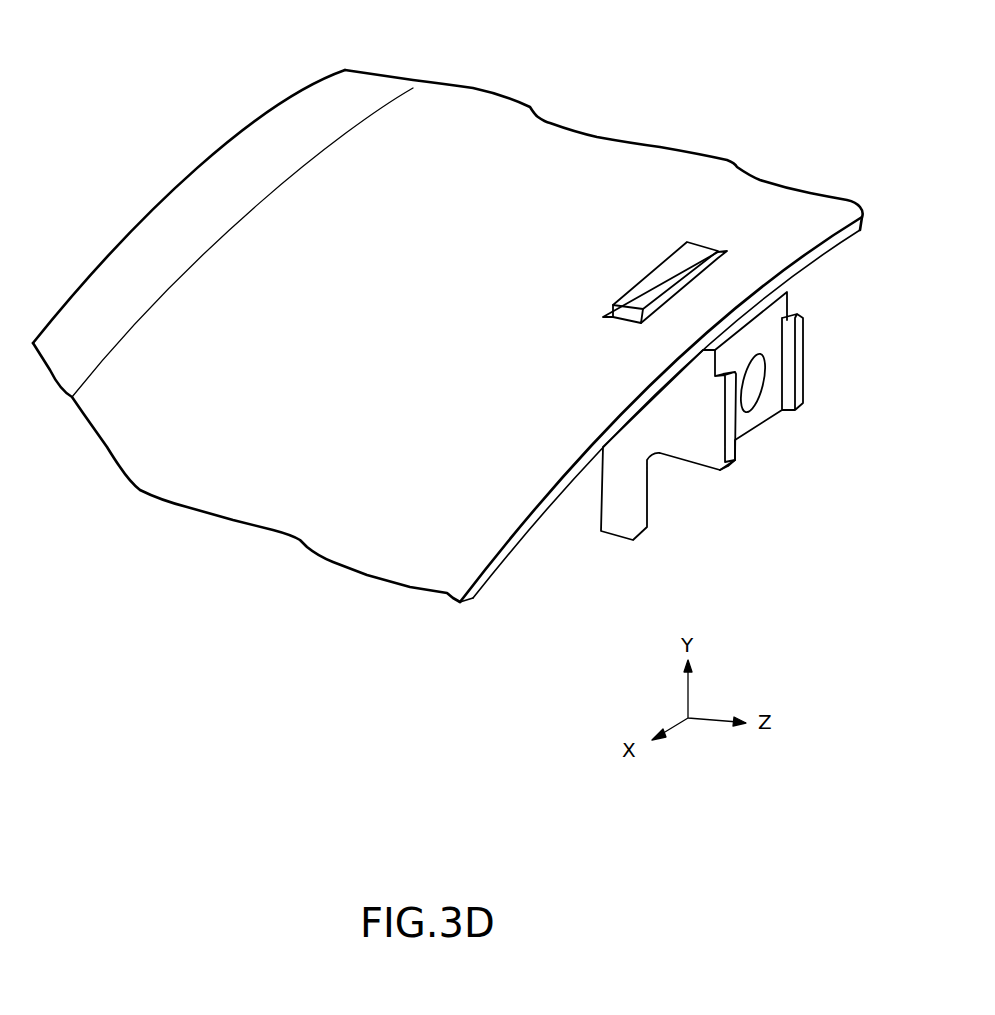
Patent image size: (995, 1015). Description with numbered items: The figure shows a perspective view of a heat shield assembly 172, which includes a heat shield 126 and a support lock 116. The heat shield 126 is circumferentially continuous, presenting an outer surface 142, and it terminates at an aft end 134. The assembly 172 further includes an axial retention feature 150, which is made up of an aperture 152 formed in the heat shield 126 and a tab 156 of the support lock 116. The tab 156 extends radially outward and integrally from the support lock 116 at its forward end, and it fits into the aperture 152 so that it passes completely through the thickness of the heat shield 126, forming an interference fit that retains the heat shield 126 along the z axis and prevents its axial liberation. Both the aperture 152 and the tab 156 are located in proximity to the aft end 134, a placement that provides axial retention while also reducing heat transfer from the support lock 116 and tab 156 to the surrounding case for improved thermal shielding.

The heat shield 126 is at (178, 160).
The heat shield assembly 172 is at (687, 131).
The outer surface 142 is at (395, 295).
The aft end 134 is at (500, 567).
The axial retention feature 150 is at (598, 296).
The tab 156 is at (668, 273).
The aperture 152 is at (620, 322).
The support lock 116 is at (707, 502).